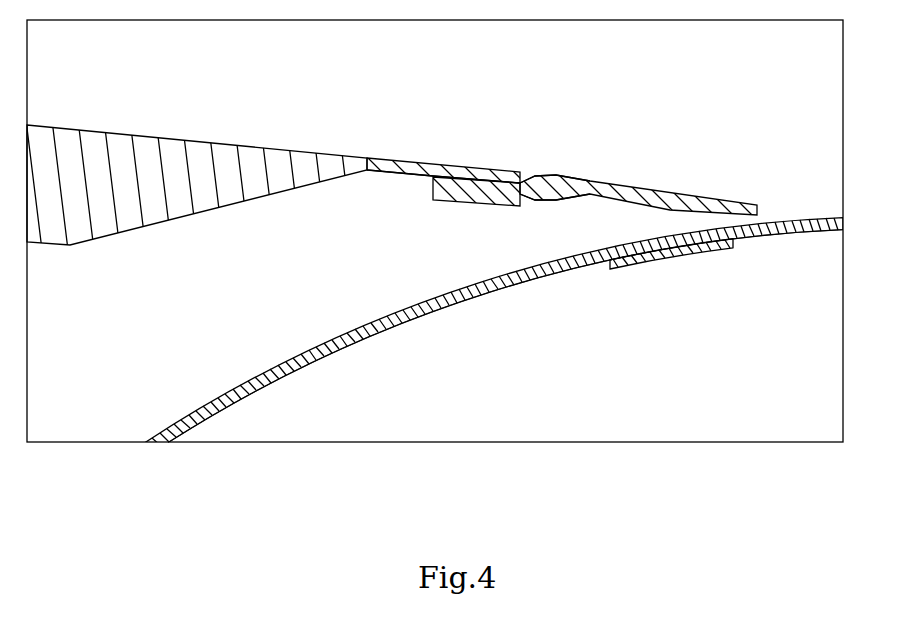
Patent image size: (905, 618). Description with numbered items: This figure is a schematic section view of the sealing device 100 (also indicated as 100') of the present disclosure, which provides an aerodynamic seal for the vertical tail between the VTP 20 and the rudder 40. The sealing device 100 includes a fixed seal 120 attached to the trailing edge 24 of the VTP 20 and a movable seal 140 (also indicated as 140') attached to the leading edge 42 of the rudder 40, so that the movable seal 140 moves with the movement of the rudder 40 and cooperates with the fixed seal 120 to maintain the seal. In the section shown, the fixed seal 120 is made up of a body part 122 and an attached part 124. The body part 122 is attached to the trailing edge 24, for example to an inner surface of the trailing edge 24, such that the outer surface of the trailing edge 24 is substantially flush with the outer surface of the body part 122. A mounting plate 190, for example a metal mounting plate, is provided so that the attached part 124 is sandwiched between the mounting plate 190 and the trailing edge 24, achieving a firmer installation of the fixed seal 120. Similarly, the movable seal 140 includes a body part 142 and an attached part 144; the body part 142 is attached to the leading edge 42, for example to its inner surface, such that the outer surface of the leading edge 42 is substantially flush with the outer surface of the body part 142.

The VTP 20 is at (190, 155).
The trailing edge 24 is at (336, 152).
The sealing device 100 is at (457, 122).
The splitter (alternative) 100' is at (457, 122).
The attached part 124 is at (430, 180).
The mounting plate 190 is at (432, 190).
The fixed seal 120 is at (623, 167).
The body part 122 is at (548, 174).
The rudder 40 is at (494, 260).
The leading edge 42 is at (788, 219).
The movable seal 140 is at (505, 336).
The lining (alternative) 140' is at (523, 376).
The body part 142 is at (377, 323).
The attached part 144 is at (630, 267).